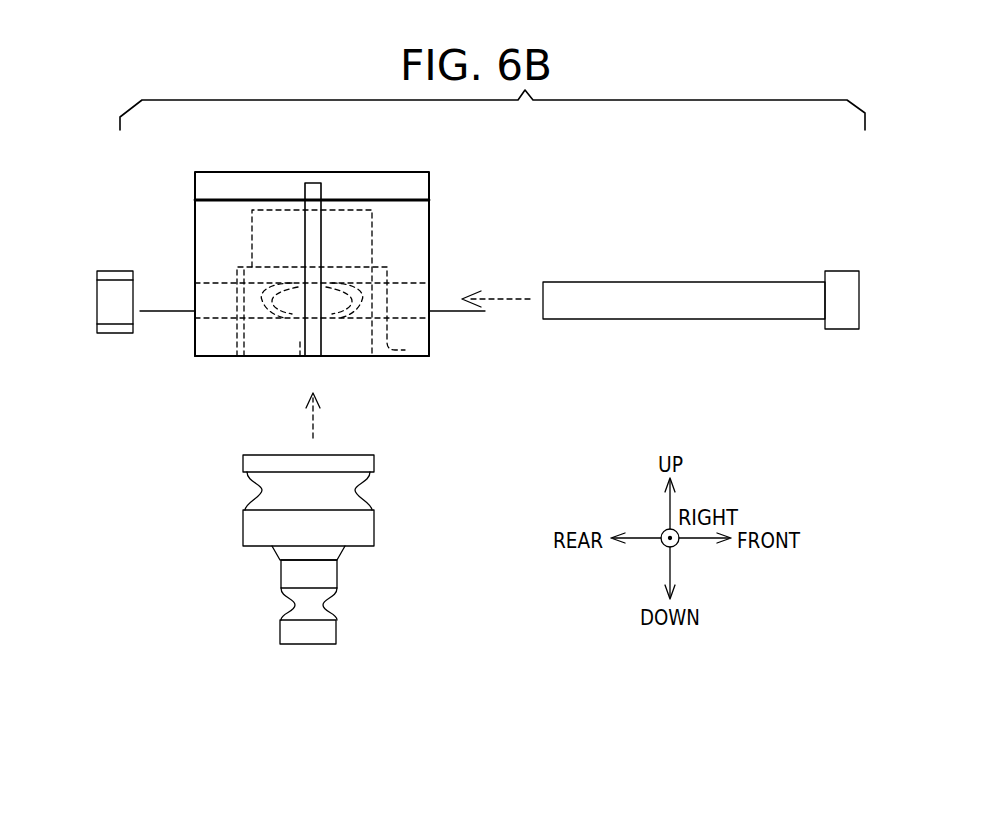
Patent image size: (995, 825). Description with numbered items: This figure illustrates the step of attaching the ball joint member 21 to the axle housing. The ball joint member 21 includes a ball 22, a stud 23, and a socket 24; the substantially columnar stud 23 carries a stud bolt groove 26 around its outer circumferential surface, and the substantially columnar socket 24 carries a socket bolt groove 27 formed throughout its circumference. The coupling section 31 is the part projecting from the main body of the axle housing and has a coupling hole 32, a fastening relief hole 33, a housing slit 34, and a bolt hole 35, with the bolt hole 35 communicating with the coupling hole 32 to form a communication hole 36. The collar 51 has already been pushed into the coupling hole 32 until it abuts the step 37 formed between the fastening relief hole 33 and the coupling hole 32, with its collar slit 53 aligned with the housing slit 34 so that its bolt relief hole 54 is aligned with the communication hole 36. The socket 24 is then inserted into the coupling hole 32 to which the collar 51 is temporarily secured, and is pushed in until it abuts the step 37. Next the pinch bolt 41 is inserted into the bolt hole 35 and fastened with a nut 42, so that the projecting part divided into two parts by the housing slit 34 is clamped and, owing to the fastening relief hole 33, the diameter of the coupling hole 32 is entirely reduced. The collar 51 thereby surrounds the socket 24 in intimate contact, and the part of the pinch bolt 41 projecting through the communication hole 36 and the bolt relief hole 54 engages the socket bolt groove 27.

The ball joint member 21 is at (328, 554).
The ball 22 is at (337, 553).
The stud 23 is at (328, 635).
The socket 24 is at (360, 528).
The stud bolt groove 26 is at (297, 605).
The socket bolt groove 27 is at (267, 490).
The coupling section 31 is at (466, 201).
The coupling hole 32 is at (430, 337).
The fastening relief hole 33 is at (362, 243).
The housing slit 34 is at (313, 187).
The bolt hole 35 is at (225, 307).
The communication hole 36 is at (240, 266).
The step 37 is at (392, 270).
The pinch bolt 41 is at (676, 297).
The nut 42 is at (113, 288).
The collar 51 is at (343, 358).
The collar slit 53 is at (300, 357).
The bolt relief hole 54 is at (296, 314).